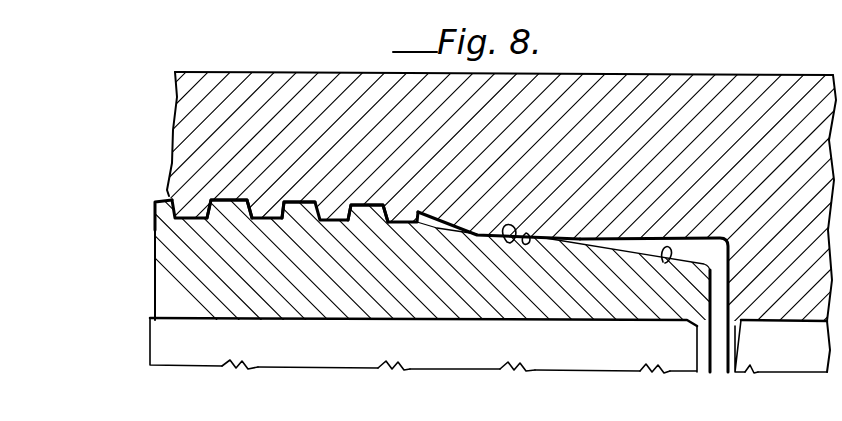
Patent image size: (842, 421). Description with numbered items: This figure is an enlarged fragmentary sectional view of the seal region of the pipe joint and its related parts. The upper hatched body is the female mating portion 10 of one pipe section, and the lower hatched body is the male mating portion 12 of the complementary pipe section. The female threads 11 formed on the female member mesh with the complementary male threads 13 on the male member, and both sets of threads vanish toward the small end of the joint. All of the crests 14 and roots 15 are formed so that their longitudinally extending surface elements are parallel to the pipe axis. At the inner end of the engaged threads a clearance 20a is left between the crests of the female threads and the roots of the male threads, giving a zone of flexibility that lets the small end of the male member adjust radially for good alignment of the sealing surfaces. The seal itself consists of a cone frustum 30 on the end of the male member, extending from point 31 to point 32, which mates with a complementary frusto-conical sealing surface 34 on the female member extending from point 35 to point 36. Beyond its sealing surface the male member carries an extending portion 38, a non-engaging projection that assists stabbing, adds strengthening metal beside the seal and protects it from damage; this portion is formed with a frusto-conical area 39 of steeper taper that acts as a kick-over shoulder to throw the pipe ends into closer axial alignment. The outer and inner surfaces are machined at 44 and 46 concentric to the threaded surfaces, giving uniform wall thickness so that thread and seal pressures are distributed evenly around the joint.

The female mating portion 10 is at (760, 92).
The machined outer surface 44 is at (272, 64).
The male mating portion 12 is at (172, 278).
The female threads 11 is at (196, 202).
The male threads 13 is at (293, 214).
The clearance 20a is at (363, 216).
The thread crests 14 is at (157, 216).
The thread roots 15 is at (157, 241).
The starting point of cone frustum 31 is at (434, 231).
The starting point of female sealing surface 35 is at (478, 230).
The end point of female sealing surface 36 is at (545, 236).
The cone frustum 30 is at (508, 243).
The frusto-conical sealing surface 34 is at (527, 234).
The end point of cone frustum 32 is at (609, 243).
The frusto-conical area 39 is at (665, 262).
The extending portion 38 is at (684, 303).
The machined inner surface 46 is at (357, 320).